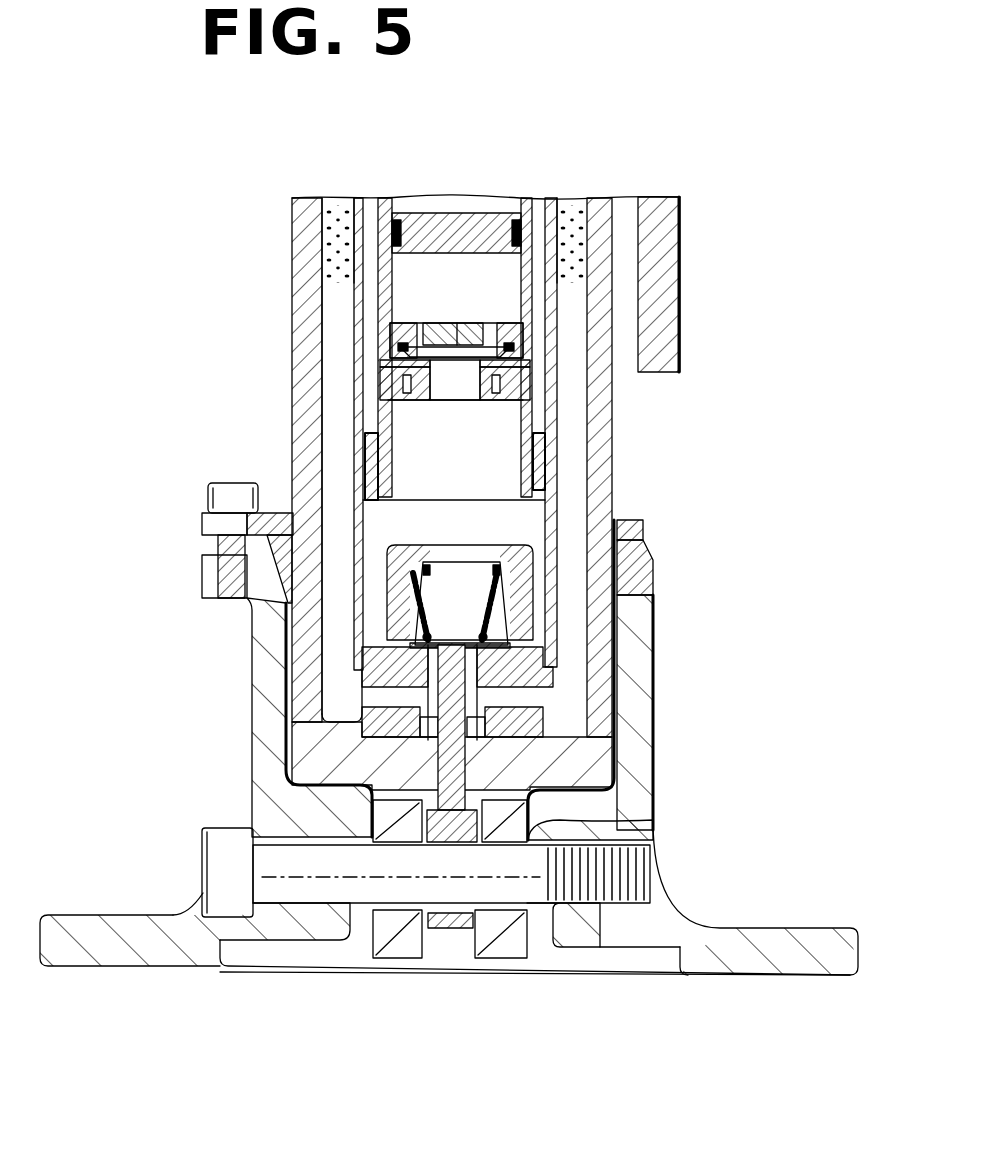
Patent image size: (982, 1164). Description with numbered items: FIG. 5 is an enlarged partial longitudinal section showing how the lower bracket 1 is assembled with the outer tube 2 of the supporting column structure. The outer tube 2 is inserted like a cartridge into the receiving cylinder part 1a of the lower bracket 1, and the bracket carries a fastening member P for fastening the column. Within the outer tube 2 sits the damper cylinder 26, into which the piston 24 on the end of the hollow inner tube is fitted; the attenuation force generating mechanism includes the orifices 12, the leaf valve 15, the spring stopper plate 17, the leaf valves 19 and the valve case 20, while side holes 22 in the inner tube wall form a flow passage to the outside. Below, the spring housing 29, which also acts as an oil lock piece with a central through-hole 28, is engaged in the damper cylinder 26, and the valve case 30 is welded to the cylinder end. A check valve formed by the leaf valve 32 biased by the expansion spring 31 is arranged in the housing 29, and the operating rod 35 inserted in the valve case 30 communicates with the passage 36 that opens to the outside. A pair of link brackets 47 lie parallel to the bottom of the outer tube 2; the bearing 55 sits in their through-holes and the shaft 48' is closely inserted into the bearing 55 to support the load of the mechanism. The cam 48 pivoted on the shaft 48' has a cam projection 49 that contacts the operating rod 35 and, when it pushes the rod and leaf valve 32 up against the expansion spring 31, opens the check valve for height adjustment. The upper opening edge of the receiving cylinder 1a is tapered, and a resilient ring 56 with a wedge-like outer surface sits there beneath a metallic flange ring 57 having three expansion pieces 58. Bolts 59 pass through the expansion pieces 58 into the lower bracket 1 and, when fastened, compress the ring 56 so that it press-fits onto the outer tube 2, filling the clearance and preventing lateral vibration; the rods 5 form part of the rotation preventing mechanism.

The lower bracket 1 is at (668, 628).
The receiving cylinder part 1a is at (267, 663).
The outer tube 2 is at (603, 430).
The rods 5 is at (668, 353).
The orifices 12 is at (440, 333).
The leaf valve 15 is at (445, 300).
The spring stopper plate 17 is at (500, 330).
The leaf valves 19 is at (392, 352).
The valve case 20 is at (530, 366).
The side holes 22 is at (395, 385).
The piston 24 is at (545, 458).
The damper cylinder 26 is at (552, 517).
The central through-hole 28 is at (447, 550).
The spring housing 29 is at (647, 533).
The valve case 30 is at (457, 672).
The expansion spring 31 is at (413, 574).
The leaf valve 32 is at (363, 697).
The operating rod 35 is at (545, 668).
The passage 36 is at (523, 700).
The link brackets 47 is at (403, 930).
The cam 48 is at (483, 987).
The shaft 48' is at (426, 946).
The cam projection 49 is at (495, 830).
The bearing 55 is at (497, 963).
The ring 56 is at (656, 605).
The flange ring 57 is at (648, 577).
The expansion pieces 58 is at (207, 525).
The bolts 59 is at (222, 500).
The fastening member P is at (196, 569).